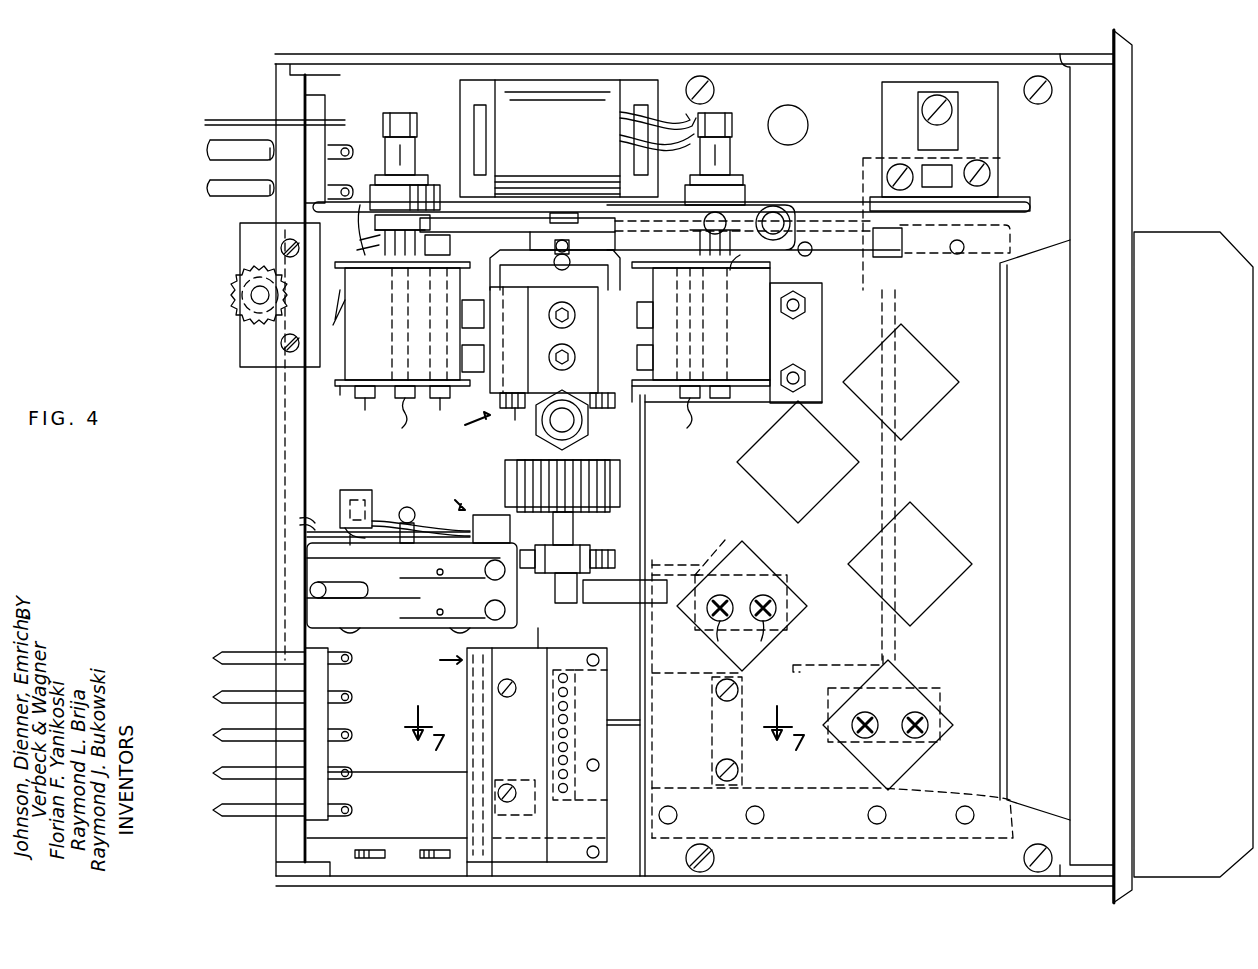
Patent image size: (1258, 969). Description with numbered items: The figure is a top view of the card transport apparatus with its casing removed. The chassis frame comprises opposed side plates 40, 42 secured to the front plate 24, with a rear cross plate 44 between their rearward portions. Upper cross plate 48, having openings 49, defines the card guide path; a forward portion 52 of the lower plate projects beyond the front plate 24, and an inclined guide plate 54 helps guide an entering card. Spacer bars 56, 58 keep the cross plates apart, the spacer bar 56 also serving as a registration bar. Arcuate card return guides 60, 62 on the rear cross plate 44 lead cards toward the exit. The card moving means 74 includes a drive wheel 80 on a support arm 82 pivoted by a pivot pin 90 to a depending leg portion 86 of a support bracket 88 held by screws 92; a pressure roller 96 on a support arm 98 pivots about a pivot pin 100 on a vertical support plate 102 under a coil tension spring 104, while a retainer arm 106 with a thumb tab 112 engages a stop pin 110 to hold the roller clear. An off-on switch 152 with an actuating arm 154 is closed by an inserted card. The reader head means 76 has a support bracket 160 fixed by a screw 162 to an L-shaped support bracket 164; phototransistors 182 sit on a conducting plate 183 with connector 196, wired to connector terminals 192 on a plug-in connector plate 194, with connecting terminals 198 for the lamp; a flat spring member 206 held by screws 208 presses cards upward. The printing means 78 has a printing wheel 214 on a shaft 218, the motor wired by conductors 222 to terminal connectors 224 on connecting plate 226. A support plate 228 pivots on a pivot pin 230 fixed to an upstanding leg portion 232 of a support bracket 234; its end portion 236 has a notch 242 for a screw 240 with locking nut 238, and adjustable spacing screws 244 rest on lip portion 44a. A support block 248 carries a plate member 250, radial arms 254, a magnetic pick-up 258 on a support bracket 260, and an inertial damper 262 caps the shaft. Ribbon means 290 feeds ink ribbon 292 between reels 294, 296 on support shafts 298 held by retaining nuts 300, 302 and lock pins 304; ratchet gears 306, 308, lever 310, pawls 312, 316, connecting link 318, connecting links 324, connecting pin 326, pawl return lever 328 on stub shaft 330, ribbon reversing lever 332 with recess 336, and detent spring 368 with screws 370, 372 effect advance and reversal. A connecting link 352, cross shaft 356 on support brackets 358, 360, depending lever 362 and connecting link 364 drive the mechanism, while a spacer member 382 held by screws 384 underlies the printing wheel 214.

The front plate 24 is at (1135, 61).
The side plate 40 is at (965, 886).
The side plate 42 is at (944, 60).
The rear cross plate 44 is at (285, 591).
The lip portion 44a is at (288, 430).
The upper cross plate 48 is at (1000, 430).
The openings 49 is at (912, 342).
The forward portion 52 is at (1208, 238).
The inclined guide plate 54 is at (1105, 587).
The spacer bar 56 is at (877, 830).
The spacer bar 58 is at (1010, 232).
The card return guide 60 is at (390, 775).
The card return guide 62 is at (345, 330).
The means for effecting selective movement 74 is at (449, 494).
The reader head means 76 is at (434, 660).
The printing means 78 is at (459, 425).
The drive wheel 80 is at (598, 548).
The support arm 82 is at (694, 555).
The depending leg portion 86 is at (760, 558).
The support bracket 88 is at (790, 582).
The pivot pin 90 is at (732, 530).
The screws 92 is at (762, 628).
The pressure roller 96 is at (580, 585).
The support arm 98 is at (409, 495).
The pivot pin 100 is at (490, 515).
The vertical support plate 102 is at (307, 536).
The coil tension spring 104 is at (430, 520).
The retainer arm 106 is at (365, 490).
The stop pin 110 is at (300, 536).
The thumb tab 112 is at (342, 500).
The off-on switch 152 is at (310, 627).
The switch contact actuating arm 154 is at (655, 603).
The support bracket 160 is at (525, 862).
The screw 162 is at (530, 660).
The L-shaped support bracket 164 is at (472, 870).
The phototransistors 182 is at (558, 762).
The conducting plate 183 is at (605, 795).
The connector terminals 192 is at (215, 698).
The plug-in connector plate 194 is at (315, 800).
The connector 196 is at (600, 765).
The connecting terminals 198 is at (636, 638).
The flat spring member 206 is at (687, 788).
The screws 208 is at (740, 690).
The printing wheel 214 is at (530, 350).
The shaft 218 is at (538, 640).
The conductors 222 is at (664, 95).
The terminal connectors 224 is at (205, 137).
The connecting plate 226 is at (315, 108).
The support plate 228 is at (852, 202).
The pivot pin 230 is at (920, 174).
The upstanding leg portion 232 is at (1000, 200).
The support bracket 234 is at (985, 120).
The end portion 236 is at (240, 241).
The locking nut 238 is at (260, 305).
The screw 240 is at (240, 300).
The notch 242 is at (250, 293).
The adjustable spacing screws 244 is at (286, 241).
The support block 248 is at (505, 390).
The plate member 250 is at (690, 390).
The radial arms 254 is at (505, 425).
The magnetic pick-up 258 is at (585, 425).
The support bracket 260 is at (540, 313).
The inertial damper 262 is at (620, 482).
The ink ribbon supply and advance means 290 is at (768, 336).
The ink ribbon 292 is at (352, 380).
The reel 294 is at (360, 392).
The reel 296 is at (764, 362).
The support shafts 298 is at (404, 426).
The retaining nut 300 is at (383, 203).
The retaining nut 302 is at (418, 175).
The lock pins 304 is at (362, 405).
The ratchet gear 306 is at (395, 255).
The ratchet gear 308 is at (725, 258).
The lever 310 is at (366, 184).
The pawl 312 is at (410, 262).
The pawl 316 is at (722, 265).
The connecting link 318 is at (545, 243).
The connecting links 324 is at (520, 225).
The connecting pin 326 is at (590, 200).
The pawl return lever 328 is at (616, 141).
The stub shaft 330 is at (560, 255).
The ribbon reversing lever 332 is at (445, 235).
The semi-circular recess 336 is at (555, 262).
The connecting link 352 is at (879, 246).
The cross shaft 356 is at (900, 470).
The support bracket 358 is at (1000, 152).
The support bracket 360 is at (915, 693).
The depending lever 362 is at (898, 660).
The connecting link 364 is at (810, 662).
The detent spring 368 is at (558, 213).
The screw 370 is at (787, 198).
The screw 372 is at (720, 218).
The spacer member 382 is at (812, 330).
The screws 384 is at (800, 305).